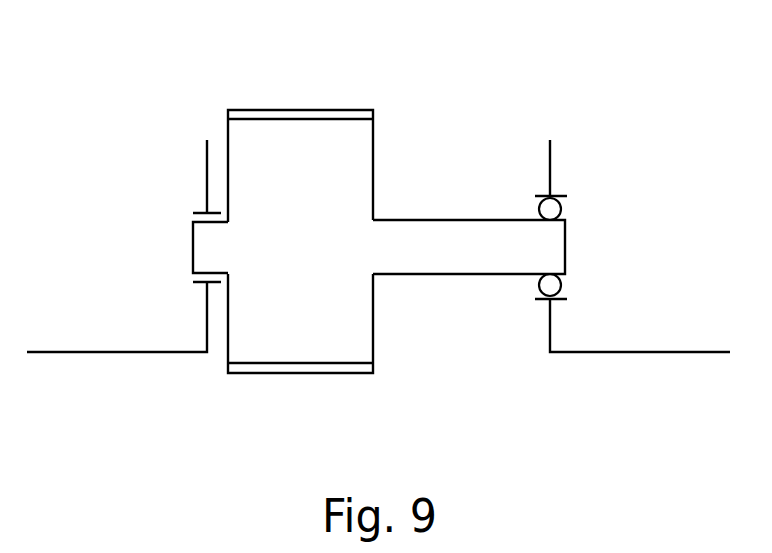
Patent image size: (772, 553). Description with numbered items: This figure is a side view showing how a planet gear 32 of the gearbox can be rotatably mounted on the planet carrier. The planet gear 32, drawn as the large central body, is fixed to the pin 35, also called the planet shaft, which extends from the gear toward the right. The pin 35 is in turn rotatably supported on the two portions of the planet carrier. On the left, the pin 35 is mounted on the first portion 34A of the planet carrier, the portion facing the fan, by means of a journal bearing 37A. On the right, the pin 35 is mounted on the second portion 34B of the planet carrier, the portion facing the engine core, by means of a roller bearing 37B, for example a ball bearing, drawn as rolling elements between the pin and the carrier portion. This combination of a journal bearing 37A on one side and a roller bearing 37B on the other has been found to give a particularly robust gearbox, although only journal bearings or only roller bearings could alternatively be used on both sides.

The planet gear 32 is at (300, 110).
The pin 35 is at (443, 220).
The journal bearing 37A is at (192, 214).
The roller bearing 37B is at (569, 208).
The first portion of the planet carrier 34A is at (105, 352).
The second portion of the planet carrier 34B is at (665, 352).